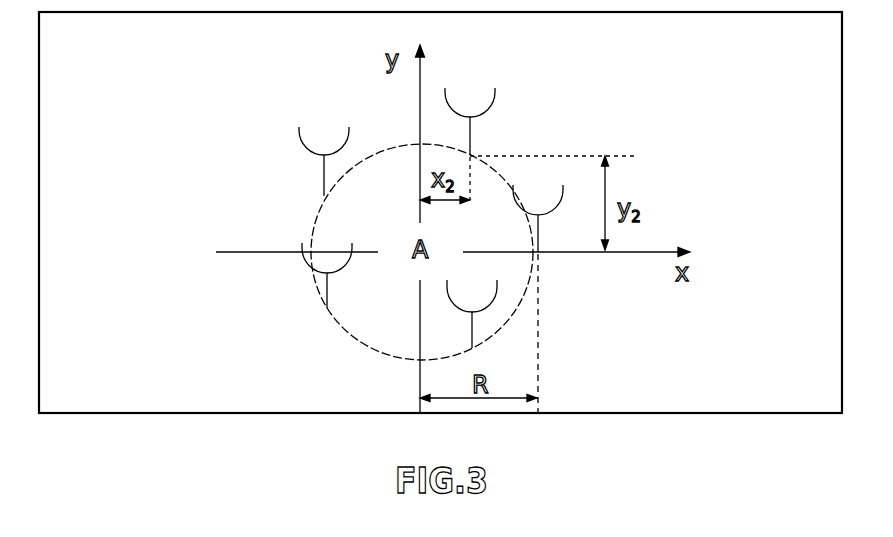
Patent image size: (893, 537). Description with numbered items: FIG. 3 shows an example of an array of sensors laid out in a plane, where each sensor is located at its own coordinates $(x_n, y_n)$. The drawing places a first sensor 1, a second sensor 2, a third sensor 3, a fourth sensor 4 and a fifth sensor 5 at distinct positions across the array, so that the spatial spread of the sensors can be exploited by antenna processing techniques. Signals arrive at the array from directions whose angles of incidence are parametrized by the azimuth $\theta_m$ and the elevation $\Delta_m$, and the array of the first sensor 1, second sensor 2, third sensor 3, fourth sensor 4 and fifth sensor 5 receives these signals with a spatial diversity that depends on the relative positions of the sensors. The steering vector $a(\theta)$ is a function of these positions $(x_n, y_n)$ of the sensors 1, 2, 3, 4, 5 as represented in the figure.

The 1st sensor 1 is at (541, 255).
The 2nd sensor 2 is at (474, 154).
The 3rd sensor 3 is at (322, 194).
The 4th sensor 4 is at (325, 310).
The 5th sensor 5 is at (476, 349).